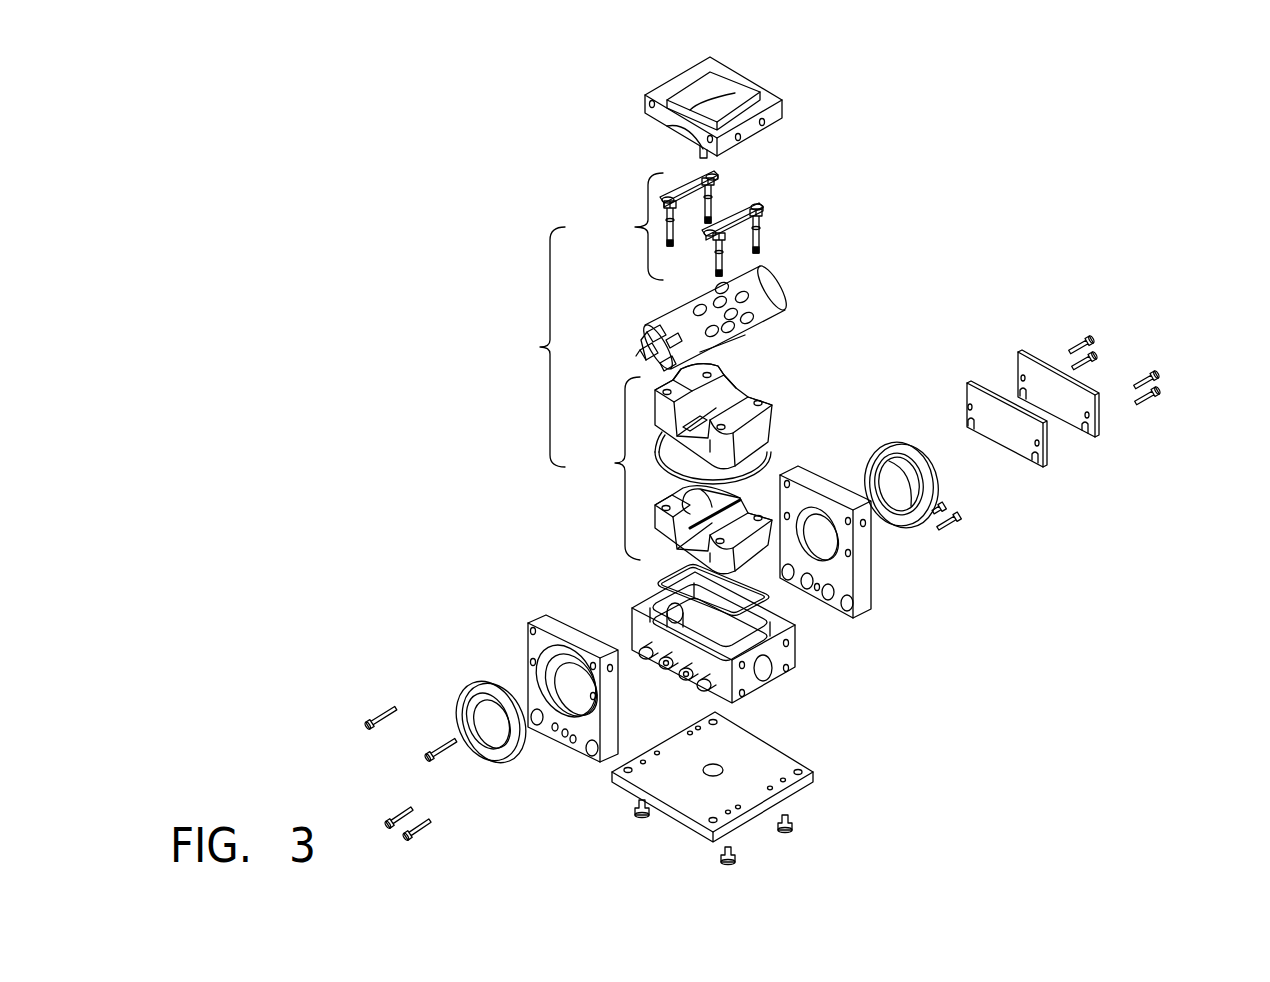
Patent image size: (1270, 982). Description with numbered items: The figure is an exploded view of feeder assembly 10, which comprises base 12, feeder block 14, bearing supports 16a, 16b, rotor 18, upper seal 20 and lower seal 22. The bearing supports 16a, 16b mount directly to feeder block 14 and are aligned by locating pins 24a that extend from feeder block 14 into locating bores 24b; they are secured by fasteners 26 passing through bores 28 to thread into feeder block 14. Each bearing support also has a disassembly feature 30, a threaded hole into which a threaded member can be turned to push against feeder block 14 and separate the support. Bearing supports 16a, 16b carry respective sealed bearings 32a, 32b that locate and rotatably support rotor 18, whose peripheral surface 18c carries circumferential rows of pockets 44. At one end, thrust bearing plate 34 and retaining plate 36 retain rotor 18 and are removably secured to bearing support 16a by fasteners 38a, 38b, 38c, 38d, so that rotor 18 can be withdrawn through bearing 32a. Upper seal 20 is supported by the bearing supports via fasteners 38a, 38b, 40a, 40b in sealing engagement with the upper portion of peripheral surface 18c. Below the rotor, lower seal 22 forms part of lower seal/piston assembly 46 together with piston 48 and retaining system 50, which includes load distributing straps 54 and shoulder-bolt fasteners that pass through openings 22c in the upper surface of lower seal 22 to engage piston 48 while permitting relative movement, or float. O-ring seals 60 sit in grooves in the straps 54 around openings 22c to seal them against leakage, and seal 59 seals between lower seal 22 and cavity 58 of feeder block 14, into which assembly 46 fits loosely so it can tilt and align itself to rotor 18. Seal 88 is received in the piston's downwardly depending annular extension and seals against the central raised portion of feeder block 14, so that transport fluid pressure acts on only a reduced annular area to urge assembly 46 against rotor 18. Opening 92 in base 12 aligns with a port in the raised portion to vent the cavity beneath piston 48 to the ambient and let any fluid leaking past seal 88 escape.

The feeder assembly 10 is at (365, 420).
The base 12 is at (803, 783).
The feeder block 14 is at (770, 675).
The bearing support 16a is at (867, 585).
The bearing support 16b is at (522, 630).
The rotor 18 is at (672, 318).
The peripheral surface 18c is at (712, 358).
The upper seal 20 is at (777, 112).
The lower seal 22 is at (760, 432).
The openings 22c is at (758, 393).
The locating pins 24a is at (638, 648).
The locating bores 24b is at (850, 603).
The fasteners 26 is at (958, 514).
The bores 28 is at (808, 579).
The disassembly feature 30 is at (817, 591).
The bearing 32a is at (930, 490).
The bearing 32b is at (473, 690).
The thrust bearing plate 34 is at (1043, 448).
The retaining plate 36 is at (1096, 424).
The fastener 38a is at (1155, 374).
The fastener 38b is at (1086, 337).
The fastener 38c is at (1156, 391).
The fastener 38d is at (1092, 354).
The fastener 40a is at (442, 742).
The fastener 40b is at (384, 710).
The pockets 44 is at (742, 288).
The lower seal/piston assembly 46 is at (538, 347).
The piston 48 is at (677, 538).
The retaining system 50 is at (631, 226).
The load distributing straps 54 is at (712, 172).
The cavity 58 is at (750, 627).
The seal 59 is at (764, 468).
The seals 60 is at (711, 190).
The seal 88 is at (660, 578).
The opening 92 is at (723, 770).